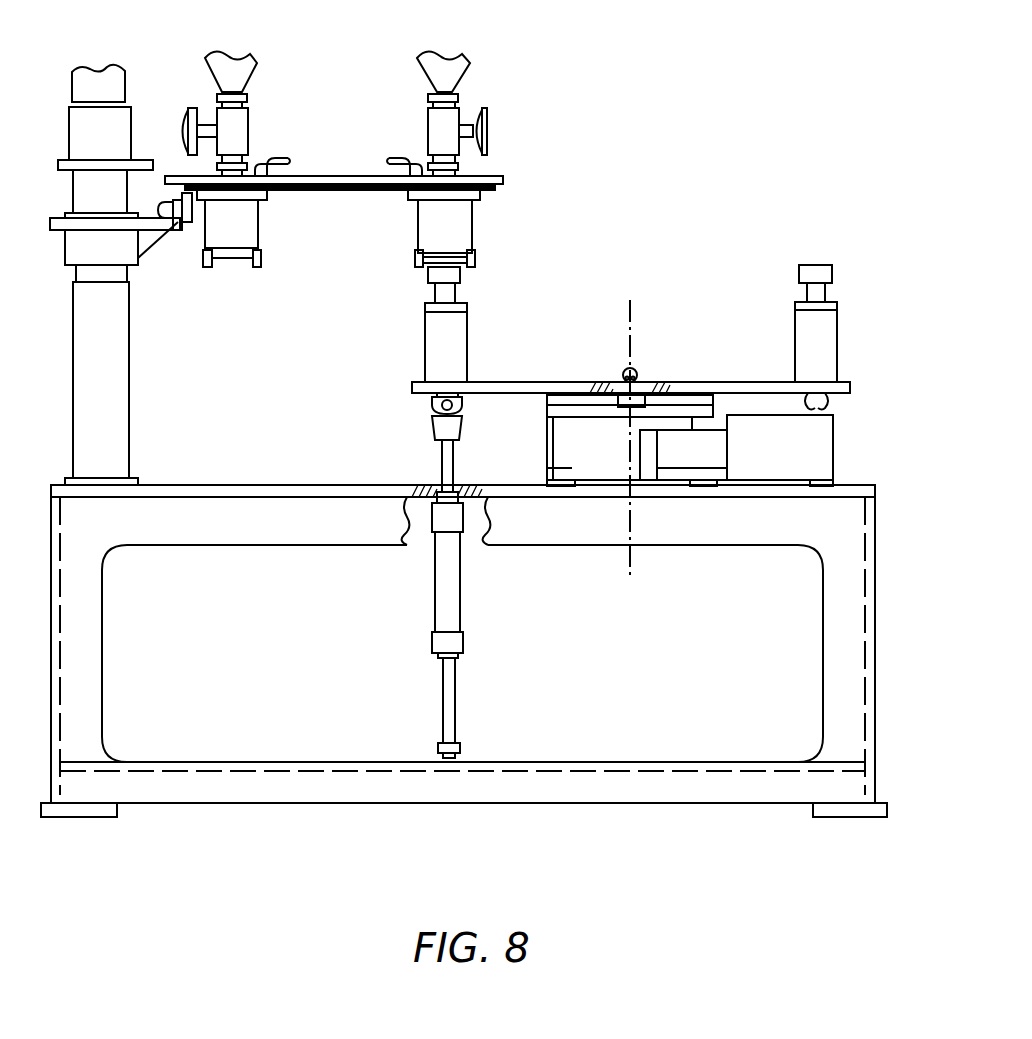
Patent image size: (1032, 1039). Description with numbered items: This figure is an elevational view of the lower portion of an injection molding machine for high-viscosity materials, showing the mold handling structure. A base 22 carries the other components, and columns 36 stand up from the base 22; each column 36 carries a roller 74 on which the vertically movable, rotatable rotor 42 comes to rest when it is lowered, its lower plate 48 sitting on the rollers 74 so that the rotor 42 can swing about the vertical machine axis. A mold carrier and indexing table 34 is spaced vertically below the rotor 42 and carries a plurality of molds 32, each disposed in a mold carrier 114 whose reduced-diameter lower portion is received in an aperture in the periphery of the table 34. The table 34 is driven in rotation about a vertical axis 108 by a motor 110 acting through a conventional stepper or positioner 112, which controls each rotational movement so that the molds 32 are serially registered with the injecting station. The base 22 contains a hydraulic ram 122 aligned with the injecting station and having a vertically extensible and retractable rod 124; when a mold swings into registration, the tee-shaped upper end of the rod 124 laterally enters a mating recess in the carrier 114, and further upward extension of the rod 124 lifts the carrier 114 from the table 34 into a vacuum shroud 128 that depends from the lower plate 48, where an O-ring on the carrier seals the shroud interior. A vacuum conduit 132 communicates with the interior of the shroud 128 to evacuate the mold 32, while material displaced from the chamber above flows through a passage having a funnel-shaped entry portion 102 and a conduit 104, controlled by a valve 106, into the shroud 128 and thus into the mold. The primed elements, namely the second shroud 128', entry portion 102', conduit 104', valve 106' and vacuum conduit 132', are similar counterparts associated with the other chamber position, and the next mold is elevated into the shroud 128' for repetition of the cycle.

The base 22 is at (320, 805).
The column 36 is at (129, 410).
The roller 74 is at (188, 222).
The lower plate 48 is at (302, 190).
The vacuum shroud 128' is at (249, 253).
The vacuum shroud 128 is at (483, 236).
The funnel-shaped entry portion 102' is at (271, 60).
The funnel-shaped entry portion 102 is at (473, 54).
The conduit 104' is at (277, 121).
The conduit 104 is at (494, 121).
The valve 106' is at (167, 91).
The valve 106 is at (522, 131).
The vacuum conduit 132' is at (296, 142).
The vacuum conduit 132 is at (388, 146).
The mold 32 is at (440, 293).
The mold carrier 114 is at (425, 352).
The mold carrier and indexing table 34 is at (692, 381).
The vertical axis 108 is at (630, 318).
The rod 124 is at (438, 458).
The hydraulic ram 122 is at (462, 606).
The motor 110 is at (833, 444).
The stepper or positioner 112 is at (648, 460).
The rotor 42 is at (599, 54).